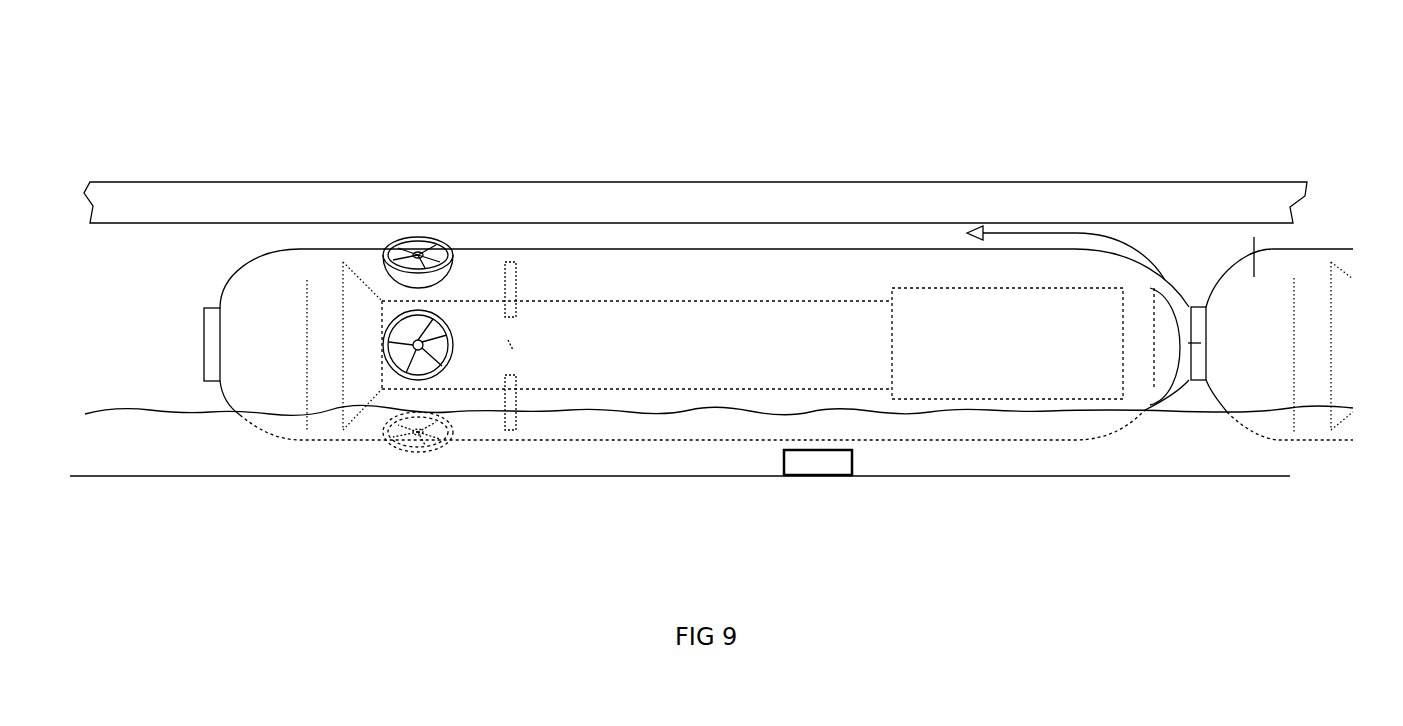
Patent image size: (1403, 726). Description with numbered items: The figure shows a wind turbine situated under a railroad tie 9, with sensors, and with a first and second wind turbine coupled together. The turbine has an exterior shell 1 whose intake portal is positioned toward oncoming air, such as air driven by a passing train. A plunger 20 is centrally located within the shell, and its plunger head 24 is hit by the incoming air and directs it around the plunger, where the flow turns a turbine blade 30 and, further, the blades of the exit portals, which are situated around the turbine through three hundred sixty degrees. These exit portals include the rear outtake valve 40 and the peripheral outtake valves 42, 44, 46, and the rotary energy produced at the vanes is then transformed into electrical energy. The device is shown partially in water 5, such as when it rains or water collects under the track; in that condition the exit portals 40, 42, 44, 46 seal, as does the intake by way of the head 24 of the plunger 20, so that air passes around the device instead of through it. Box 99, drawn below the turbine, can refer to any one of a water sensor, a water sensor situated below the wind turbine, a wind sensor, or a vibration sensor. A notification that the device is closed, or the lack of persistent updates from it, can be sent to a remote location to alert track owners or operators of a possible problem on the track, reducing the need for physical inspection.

The exterior shell 1 is at (269, 278).
The water 5 is at (148, 438).
The railroad tie 9 is at (125, 190).
The plunger 20 is at (778, 348).
The plunger head 24 is at (1162, 320).
The turbine blade 30 is at (511, 280).
The rear outtake valve 40 is at (212, 343).
The peripheral outtake valve 42 is at (410, 453).
The peripheral outtake valve 44 is at (442, 375).
The peripheral outtake valve 46 is at (411, 250).
The sensor box 99 is at (833, 460).